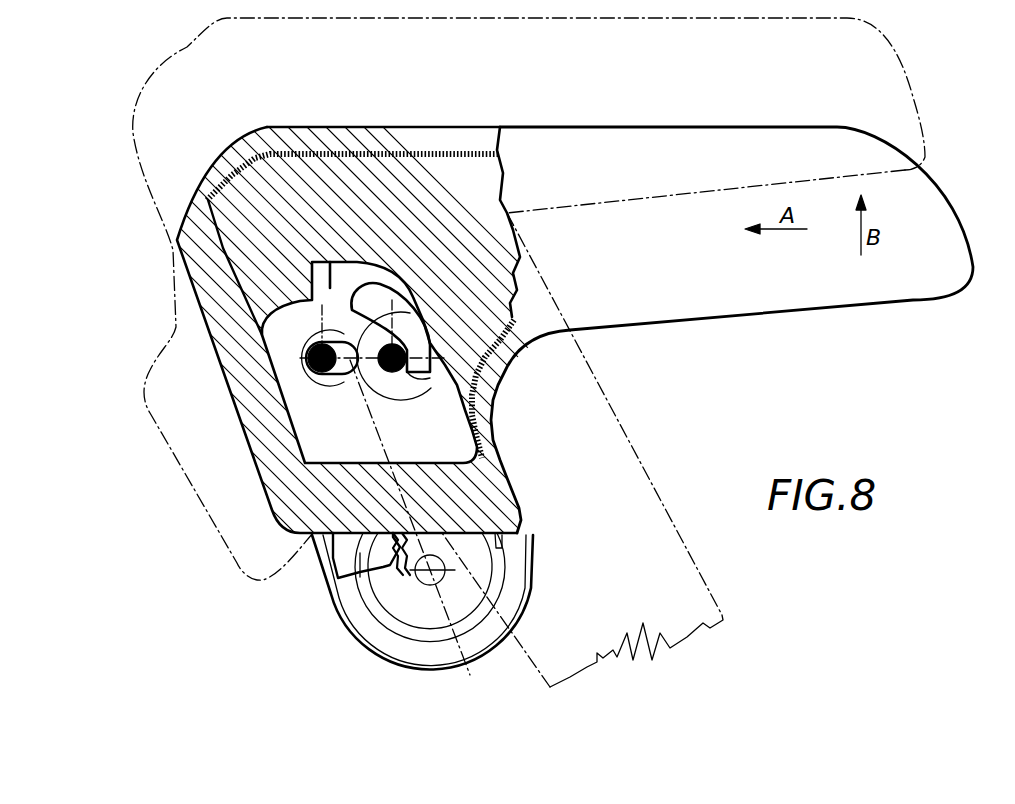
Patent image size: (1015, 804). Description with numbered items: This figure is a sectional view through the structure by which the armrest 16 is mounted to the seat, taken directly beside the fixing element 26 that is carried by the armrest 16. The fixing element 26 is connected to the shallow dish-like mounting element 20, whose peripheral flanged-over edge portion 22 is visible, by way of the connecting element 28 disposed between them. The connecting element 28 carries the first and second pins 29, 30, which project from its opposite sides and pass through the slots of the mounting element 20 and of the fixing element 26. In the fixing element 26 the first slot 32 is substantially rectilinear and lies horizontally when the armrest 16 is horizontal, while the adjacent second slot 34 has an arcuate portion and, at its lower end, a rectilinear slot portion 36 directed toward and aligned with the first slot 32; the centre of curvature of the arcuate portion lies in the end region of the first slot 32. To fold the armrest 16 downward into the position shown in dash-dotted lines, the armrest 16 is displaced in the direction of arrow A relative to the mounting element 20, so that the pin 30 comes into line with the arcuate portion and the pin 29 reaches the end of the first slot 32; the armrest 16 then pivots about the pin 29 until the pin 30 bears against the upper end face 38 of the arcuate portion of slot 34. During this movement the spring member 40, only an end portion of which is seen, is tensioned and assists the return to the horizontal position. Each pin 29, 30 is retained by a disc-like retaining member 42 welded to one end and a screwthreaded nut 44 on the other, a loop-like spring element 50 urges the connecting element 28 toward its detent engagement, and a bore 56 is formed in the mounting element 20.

The armrest 16 is at (685, 160).
The mounting element 20 is at (512, 568).
The flanged-over edge portion 22 is at (533, 603).
The fixing element 26 is at (283, 330).
The connecting element 28 is at (360, 556).
The first pin 29 is at (325, 373).
The second pin 30 is at (394, 373).
The first slot 32 is at (340, 375).
The second slot 34 is at (418, 305).
The rectilinear slot portion 36 is at (408, 378).
The upper end face 38 is at (340, 278).
The spring member 40 is at (312, 278).
The retaining member 42 is at (470, 380).
The screwthreaded nut 44 is at (322, 357).
The spring element 50 is at (400, 580).
The bore 56 is at (448, 582).